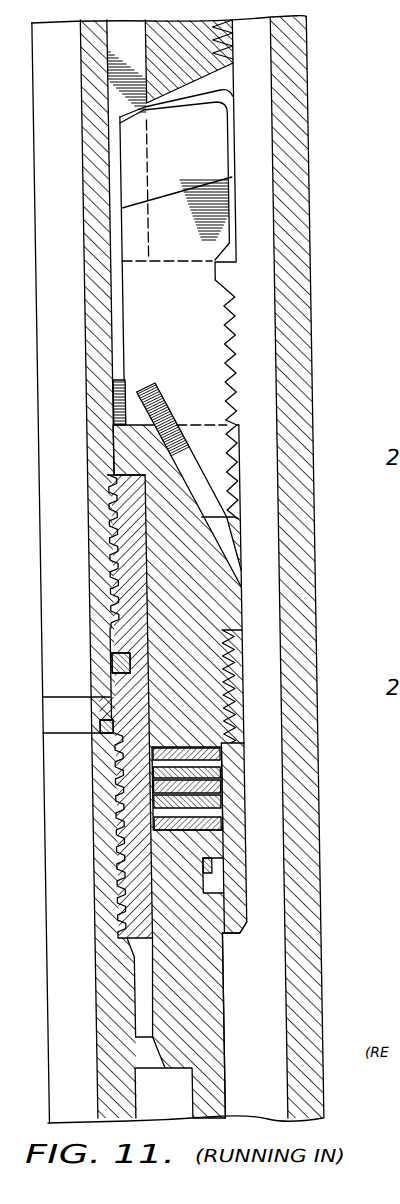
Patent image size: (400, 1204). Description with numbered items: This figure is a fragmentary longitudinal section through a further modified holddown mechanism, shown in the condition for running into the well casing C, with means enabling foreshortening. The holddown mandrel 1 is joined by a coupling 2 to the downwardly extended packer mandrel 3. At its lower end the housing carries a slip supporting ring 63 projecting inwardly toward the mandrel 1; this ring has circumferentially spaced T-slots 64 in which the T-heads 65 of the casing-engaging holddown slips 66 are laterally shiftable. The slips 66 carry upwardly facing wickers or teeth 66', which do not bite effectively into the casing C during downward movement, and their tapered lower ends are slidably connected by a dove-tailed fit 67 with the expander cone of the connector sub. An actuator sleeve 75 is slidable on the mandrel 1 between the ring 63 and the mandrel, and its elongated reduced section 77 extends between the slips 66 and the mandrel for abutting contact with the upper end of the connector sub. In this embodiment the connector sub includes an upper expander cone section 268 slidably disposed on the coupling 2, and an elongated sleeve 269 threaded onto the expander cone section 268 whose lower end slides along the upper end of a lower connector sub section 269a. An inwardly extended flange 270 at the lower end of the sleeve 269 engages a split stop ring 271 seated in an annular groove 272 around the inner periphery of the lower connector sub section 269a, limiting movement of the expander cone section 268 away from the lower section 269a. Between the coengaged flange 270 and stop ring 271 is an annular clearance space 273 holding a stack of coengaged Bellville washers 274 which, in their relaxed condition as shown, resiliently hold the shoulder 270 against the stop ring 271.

The mandrel 1 is at (88, 123).
The coupling 2 is at (100, 610).
The packer mandrel 3 is at (87, 1018).
The slip supporting ring 63 is at (209, 65).
The T-slots 64 is at (232, 96).
The T-heads 65 is at (178, 161).
The holddown slips 66 is at (276, 244).
The wickers or teeth 66' is at (283, 479).
The dove-tailed fit 67 is at (131, 412).
The actuator sleeve 75 is at (114, 39).
The reduced section 77 is at (112, 218).
The upper expander cone section 268 is at (218, 610).
The elongated sleeve 269 is at (222, 790).
The lower connector sub section 269a is at (191, 977).
The flange 270 is at (209, 897).
The split stop ring 271 is at (199, 867).
The annular groove 272 is at (189, 878).
The annular clearance space 273 is at (206, 768).
The Bellville washers 274 is at (142, 808).
The well casing C is at (286, 450).